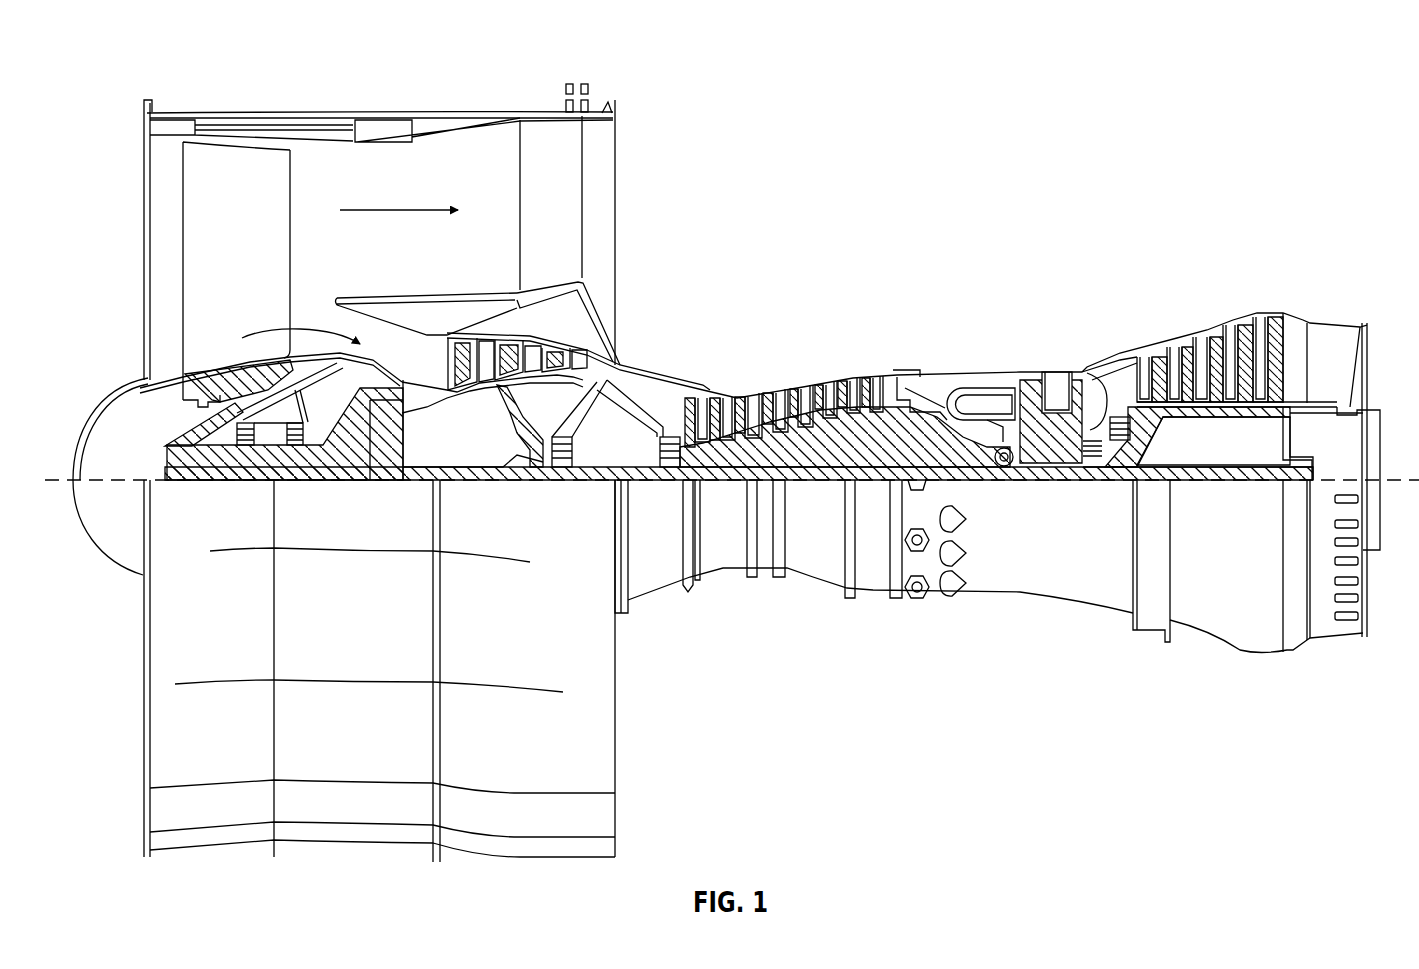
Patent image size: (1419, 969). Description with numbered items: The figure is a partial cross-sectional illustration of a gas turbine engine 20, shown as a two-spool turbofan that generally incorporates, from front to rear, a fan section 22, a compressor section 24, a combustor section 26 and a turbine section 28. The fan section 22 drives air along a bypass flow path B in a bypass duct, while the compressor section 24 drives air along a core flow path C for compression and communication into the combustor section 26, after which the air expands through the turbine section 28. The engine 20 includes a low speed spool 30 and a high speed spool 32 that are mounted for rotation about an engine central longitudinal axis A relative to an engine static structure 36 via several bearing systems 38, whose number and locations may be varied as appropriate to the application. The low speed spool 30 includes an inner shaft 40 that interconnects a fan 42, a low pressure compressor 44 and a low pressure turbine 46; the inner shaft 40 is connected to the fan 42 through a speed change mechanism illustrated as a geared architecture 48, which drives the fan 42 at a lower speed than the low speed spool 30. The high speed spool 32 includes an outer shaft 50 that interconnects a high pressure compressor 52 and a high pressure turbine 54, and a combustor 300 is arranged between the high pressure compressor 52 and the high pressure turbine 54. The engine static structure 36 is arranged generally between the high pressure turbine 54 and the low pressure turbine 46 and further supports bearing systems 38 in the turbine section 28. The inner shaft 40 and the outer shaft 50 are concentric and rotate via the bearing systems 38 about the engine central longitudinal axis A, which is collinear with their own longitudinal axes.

The gas turbine engine 20 is at (1250, 74).
The fan section 22 is at (240, 110).
The compressor section 24 is at (764, 304).
The combustor section 26 is at (852, 335).
The turbine section 28 is at (1129, 274).
The low speed spool 30 is at (832, 486).
The high speed spool 32 is at (893, 433).
The engine static structure 36 is at (872, 602).
The bearing systems 38 is at (240, 446).
The inner shaft 40 is at (662, 486).
The fan 42 is at (247, 215).
The low pressure compressor 44 is at (532, 363).
The low pressure turbine 46 is at (1213, 322).
The geared architecture 48 is at (385, 452).
The outer shaft 50 is at (988, 466).
The high pressure compressor 52 is at (797, 447).
The high pressure turbine 54 is at (1052, 370).
The combustor 300 is at (970, 403).
The engine central longitudinal axis A is at (1392, 478).
The bypass flow path B is at (407, 208).
The core flow path C is at (263, 327).